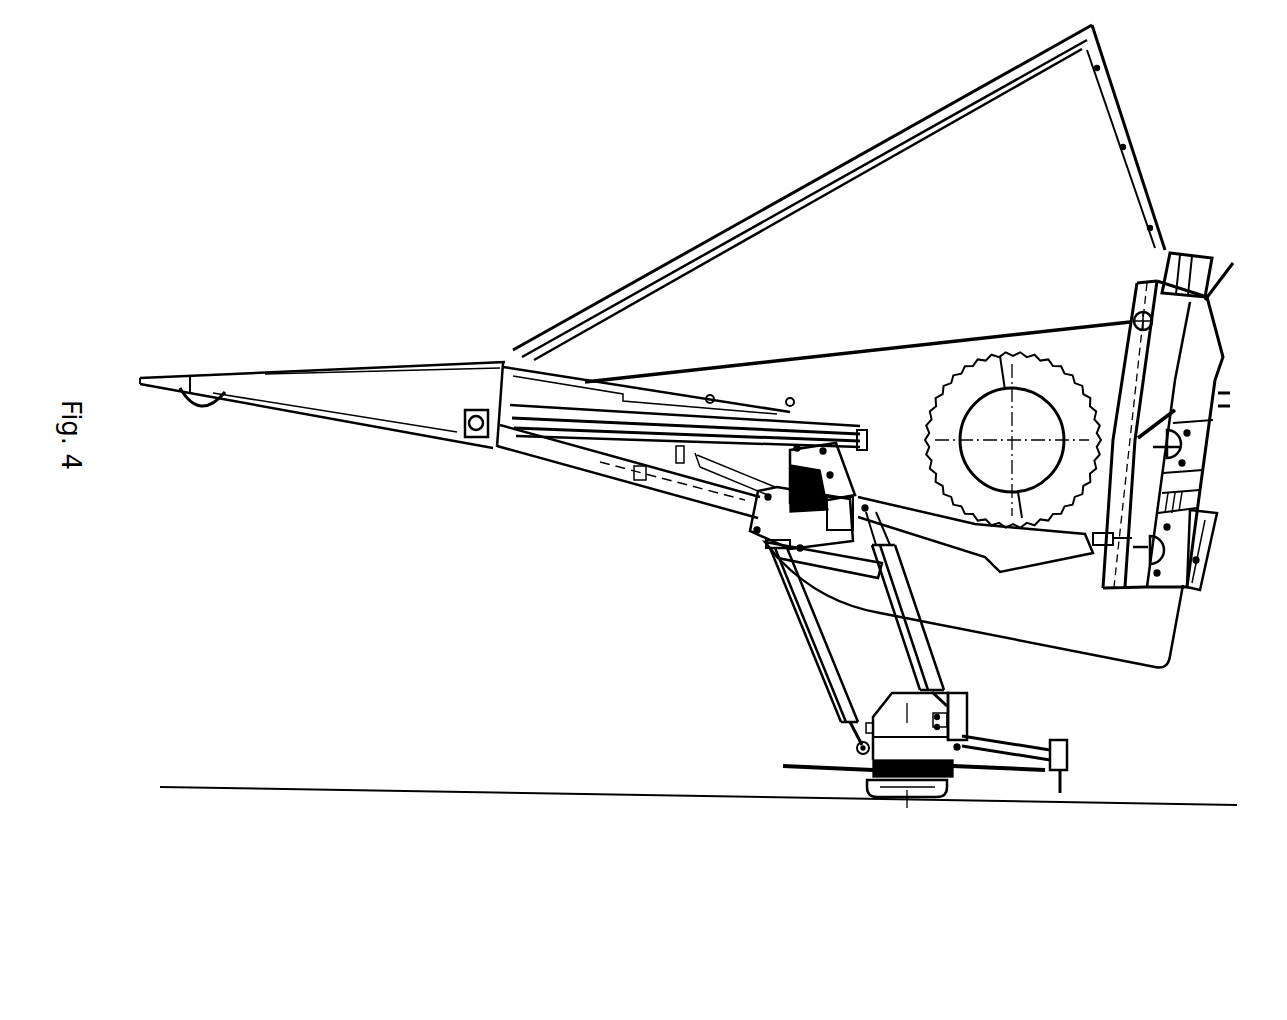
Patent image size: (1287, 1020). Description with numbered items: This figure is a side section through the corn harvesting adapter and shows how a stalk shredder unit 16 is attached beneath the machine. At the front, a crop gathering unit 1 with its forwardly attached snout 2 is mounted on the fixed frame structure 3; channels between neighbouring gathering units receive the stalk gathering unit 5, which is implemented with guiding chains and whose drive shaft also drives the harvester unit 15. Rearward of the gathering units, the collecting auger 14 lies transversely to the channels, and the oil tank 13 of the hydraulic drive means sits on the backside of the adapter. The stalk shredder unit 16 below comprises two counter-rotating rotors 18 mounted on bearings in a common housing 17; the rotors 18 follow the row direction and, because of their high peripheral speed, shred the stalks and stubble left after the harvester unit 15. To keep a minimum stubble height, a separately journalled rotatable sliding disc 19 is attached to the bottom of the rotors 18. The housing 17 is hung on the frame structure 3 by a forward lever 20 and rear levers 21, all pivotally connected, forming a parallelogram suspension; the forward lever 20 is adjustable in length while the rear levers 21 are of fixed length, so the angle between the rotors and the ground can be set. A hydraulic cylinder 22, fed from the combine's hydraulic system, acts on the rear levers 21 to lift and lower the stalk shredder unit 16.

The crop gathering unit 1 is at (780, 303).
The snout 2 is at (334, 397).
The frame structure 3 is at (1166, 346).
The stalk gathering unit 5 is at (655, 449).
The oil tank 13 is at (1141, 352).
The collecting auger 14 is at (1073, 426).
The harvester unit 15 is at (865, 447).
The stalk shredder unit 16 is at (872, 814).
The housing 17 is at (900, 748).
The rotor 18 is at (867, 773).
The sliding disc 19 is at (925, 799).
The forward lever 20 is at (812, 643).
The rear lever 21 is at (915, 630).
The hydraulic cylinder 22 is at (840, 565).